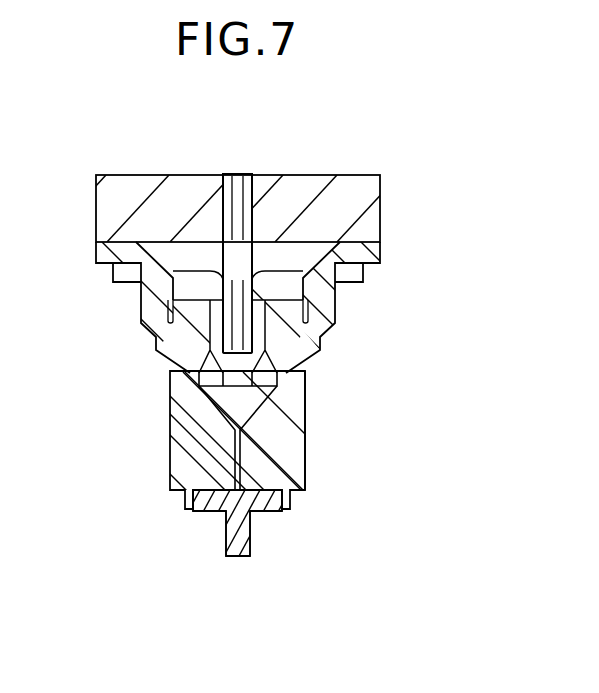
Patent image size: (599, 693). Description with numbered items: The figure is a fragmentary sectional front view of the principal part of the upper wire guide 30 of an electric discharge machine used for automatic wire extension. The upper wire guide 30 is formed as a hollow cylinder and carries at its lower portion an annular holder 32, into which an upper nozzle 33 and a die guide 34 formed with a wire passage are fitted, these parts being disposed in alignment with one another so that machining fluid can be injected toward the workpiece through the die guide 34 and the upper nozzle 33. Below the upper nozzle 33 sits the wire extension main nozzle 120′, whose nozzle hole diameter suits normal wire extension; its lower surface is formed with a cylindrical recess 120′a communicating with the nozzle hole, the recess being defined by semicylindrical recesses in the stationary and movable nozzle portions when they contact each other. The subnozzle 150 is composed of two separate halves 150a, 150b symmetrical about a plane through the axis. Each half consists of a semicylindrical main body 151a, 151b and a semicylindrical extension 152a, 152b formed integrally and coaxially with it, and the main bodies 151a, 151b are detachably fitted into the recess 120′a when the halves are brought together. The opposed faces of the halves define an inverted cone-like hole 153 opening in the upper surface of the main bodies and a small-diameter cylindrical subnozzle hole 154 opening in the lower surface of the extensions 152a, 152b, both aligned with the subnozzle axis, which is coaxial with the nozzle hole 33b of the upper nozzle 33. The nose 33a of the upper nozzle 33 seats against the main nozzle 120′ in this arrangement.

The upper wire guide 30 is at (392, 164).
The die guide 34 is at (192, 257).
The annular holder 32 is at (148, 302).
The upper nozzle 33 is at (172, 360).
The insert nose 33a is at (283, 383).
The nozzle hole 33b is at (230, 387).
The wire extension main nozzle 120′ is at (188, 440).
The cylindrical recess 120′a is at (280, 474).
The subnozzle 150 is at (280, 551).
The subnozzle half 150a is at (198, 522).
The subnozzle half 150b is at (273, 518).
The semicylindrical main body 151a is at (213, 517).
The semicylindrical main body 151b is at (268, 520).
The inverted cone-like hole 153 is at (222, 515).
The small-diameter cylindrical subnozzle hole 154 is at (225, 518).
The semicylindrical extension 152a is at (231, 558).
The semicylindrical extension 152b is at (261, 518).